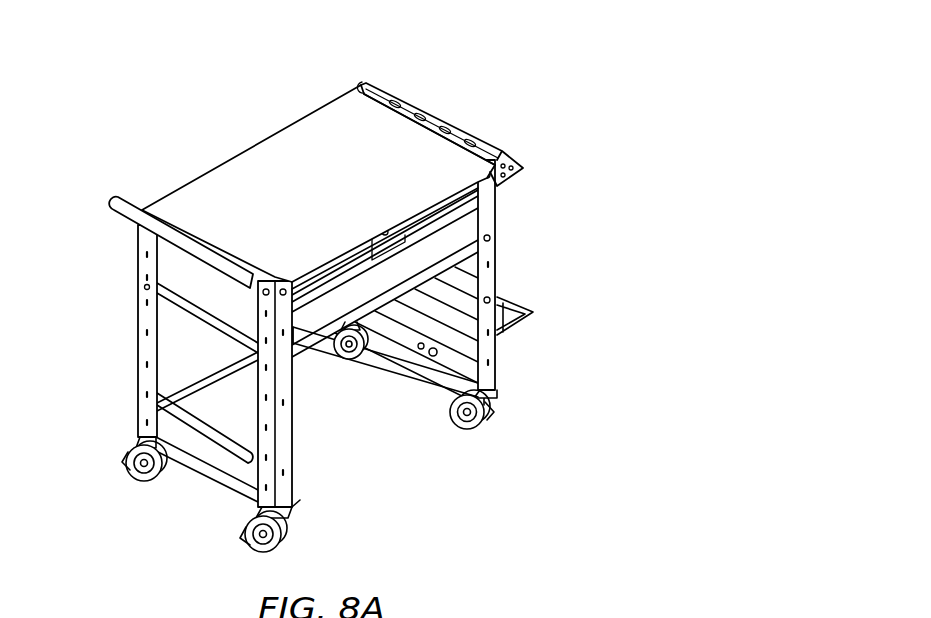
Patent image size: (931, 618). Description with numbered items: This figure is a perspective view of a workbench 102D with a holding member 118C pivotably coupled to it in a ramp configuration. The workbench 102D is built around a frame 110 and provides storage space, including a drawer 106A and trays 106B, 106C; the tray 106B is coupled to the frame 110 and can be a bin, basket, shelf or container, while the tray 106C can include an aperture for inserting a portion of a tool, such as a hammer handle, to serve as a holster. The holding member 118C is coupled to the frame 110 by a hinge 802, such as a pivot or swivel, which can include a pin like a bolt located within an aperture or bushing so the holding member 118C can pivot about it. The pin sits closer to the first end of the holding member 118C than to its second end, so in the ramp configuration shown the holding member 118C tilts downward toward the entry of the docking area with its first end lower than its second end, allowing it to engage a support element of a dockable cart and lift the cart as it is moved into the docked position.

The workbench 102D is at (493, 98).
The drawer 106A is at (480, 212).
The tray 106B is at (515, 300).
The tray 106C is at (510, 160).
The frame 110 is at (138, 315).
The holding member 118C is at (410, 367).
The hinge 802 is at (433, 357).